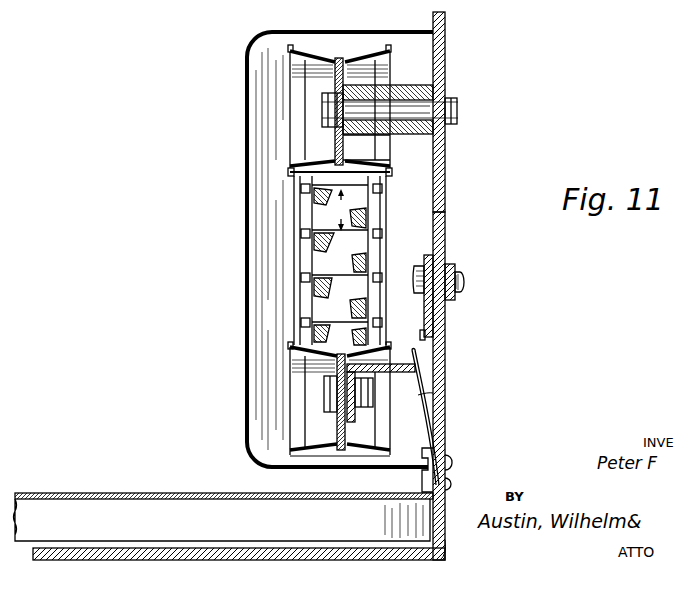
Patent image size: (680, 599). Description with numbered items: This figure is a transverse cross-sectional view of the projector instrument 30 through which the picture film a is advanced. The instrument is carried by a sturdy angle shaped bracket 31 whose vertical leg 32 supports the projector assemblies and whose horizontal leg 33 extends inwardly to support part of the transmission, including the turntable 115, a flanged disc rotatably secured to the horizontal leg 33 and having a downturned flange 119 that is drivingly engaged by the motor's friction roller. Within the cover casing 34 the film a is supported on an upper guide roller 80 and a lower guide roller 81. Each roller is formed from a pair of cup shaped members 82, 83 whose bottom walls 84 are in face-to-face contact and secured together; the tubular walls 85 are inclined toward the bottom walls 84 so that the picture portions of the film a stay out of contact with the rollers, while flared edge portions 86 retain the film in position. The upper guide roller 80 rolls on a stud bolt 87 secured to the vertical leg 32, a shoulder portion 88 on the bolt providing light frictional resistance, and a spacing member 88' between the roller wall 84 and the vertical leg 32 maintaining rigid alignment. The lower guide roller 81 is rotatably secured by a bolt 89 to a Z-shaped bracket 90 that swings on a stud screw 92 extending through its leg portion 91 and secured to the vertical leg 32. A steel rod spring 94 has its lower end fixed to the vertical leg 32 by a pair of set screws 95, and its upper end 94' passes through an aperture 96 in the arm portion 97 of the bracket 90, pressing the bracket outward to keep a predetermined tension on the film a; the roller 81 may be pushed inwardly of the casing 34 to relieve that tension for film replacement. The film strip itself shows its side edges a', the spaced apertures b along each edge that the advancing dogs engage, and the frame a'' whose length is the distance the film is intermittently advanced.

The projector instrument 30 is at (200, 204).
The angle shaped bracket 31 is at (452, 27).
The vertical leg 32 is at (440, 226).
The horizontal leg 33 is at (204, 548).
The cover casing 34 is at (293, 28).
The upper guide roller 80 is at (361, 119).
The lower guide roller 81 is at (300, 399).
The cup shaped member 82 is at (296, 134).
The cup shaped member 83 is at (383, 154).
The bottom wall 84 is at (322, 142).
The tubular wall 85 is at (304, 70).
The flared edge portion 86 is at (296, 51).
The stud bolt 87 is at (418, 110).
The shoulder portion 88 is at (278, 110).
The spacing member 88' is at (479, 118).
The bolt 89 is at (324, 391).
The Z-shaped bracket 90 is at (402, 355).
The leg portion 91 is at (432, 318).
The stud screw 92 is at (463, 283).
The steel rod spring 94 is at (462, 389).
The upper end of rod spring 94' is at (429, 383).
The set screws 95 is at (422, 488).
The aperture 96 is at (434, 376).
The arm portion 97 is at (372, 380).
The turntable 115 is at (97, 493).
The downturned flange 119 is at (437, 527).
The picture film a is at (315, 246).
The side edge of film a' is at (315, 260).
The frame a'' is at (341, 210).
The spaced apertures b is at (301, 278).